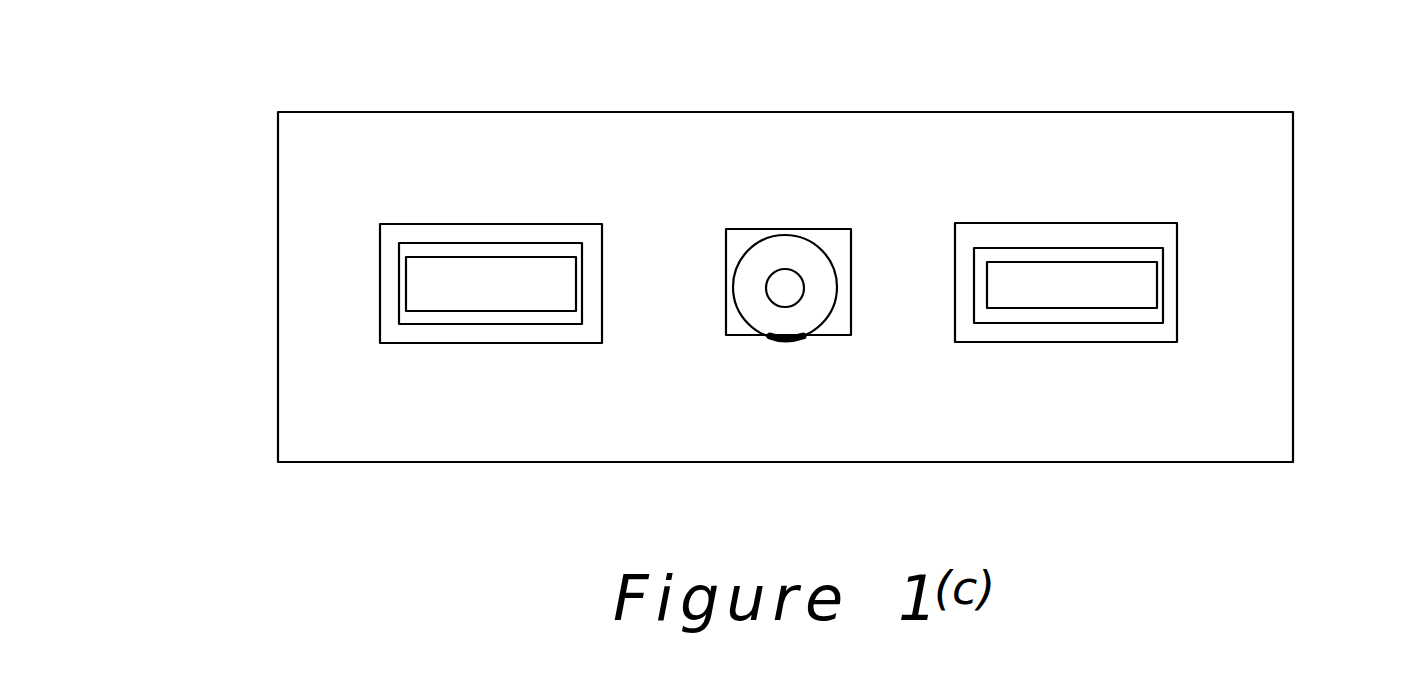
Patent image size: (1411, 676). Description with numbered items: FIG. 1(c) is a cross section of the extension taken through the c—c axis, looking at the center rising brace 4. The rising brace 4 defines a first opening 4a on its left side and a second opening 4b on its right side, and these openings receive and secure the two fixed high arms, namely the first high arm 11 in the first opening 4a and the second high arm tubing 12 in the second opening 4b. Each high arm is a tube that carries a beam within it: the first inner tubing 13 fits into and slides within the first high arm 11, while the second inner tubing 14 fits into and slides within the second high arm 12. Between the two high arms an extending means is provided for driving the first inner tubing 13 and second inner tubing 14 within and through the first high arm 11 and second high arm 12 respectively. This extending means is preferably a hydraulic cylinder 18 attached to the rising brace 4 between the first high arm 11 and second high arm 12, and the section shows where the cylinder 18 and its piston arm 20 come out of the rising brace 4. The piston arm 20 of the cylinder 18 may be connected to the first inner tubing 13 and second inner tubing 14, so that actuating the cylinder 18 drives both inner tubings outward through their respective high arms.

The rising brace 4 is at (687, 108).
The first opening 4a is at (533, 223).
The second opening 4b is at (1082, 222).
The first high arm 11 is at (568, 325).
The second high arm tubing 12 is at (1155, 323).
The first inner tubing 13 is at (410, 285).
The second inner tubing 14 is at (1155, 279).
The hydraulic cylinder 18 is at (825, 321).
The piston arm 20 is at (797, 275).